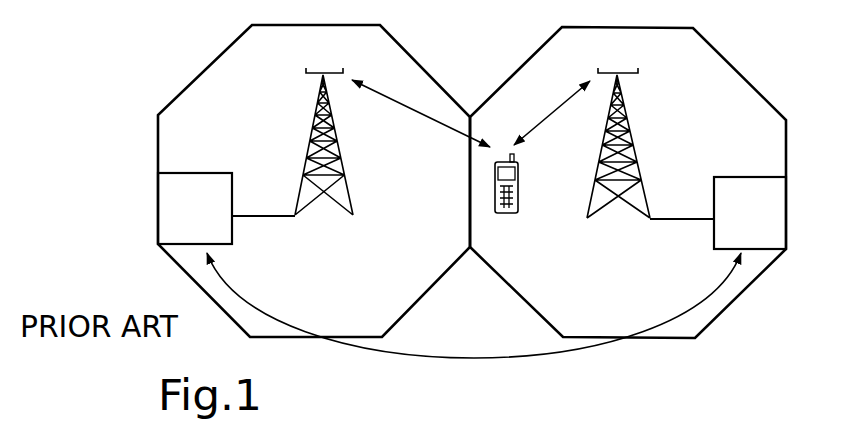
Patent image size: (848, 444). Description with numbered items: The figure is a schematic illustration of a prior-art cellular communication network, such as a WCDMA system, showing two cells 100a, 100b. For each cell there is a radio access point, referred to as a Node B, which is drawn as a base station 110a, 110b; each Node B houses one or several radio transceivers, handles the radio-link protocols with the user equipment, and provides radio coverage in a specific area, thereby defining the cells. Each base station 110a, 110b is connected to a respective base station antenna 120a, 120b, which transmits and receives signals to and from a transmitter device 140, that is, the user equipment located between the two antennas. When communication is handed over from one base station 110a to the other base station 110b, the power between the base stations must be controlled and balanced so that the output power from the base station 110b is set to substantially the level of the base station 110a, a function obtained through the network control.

The cell 100a is at (192, 74).
The cell 100b is at (731, 52).
The base station 110a is at (177, 213).
The base station 110b is at (767, 228).
The base station antenna 120a is at (309, 140).
The base station antenna 120b is at (632, 138).
The transmitter device 140 is at (508, 212).